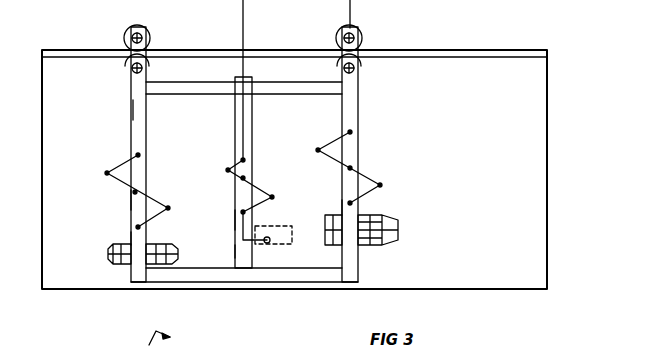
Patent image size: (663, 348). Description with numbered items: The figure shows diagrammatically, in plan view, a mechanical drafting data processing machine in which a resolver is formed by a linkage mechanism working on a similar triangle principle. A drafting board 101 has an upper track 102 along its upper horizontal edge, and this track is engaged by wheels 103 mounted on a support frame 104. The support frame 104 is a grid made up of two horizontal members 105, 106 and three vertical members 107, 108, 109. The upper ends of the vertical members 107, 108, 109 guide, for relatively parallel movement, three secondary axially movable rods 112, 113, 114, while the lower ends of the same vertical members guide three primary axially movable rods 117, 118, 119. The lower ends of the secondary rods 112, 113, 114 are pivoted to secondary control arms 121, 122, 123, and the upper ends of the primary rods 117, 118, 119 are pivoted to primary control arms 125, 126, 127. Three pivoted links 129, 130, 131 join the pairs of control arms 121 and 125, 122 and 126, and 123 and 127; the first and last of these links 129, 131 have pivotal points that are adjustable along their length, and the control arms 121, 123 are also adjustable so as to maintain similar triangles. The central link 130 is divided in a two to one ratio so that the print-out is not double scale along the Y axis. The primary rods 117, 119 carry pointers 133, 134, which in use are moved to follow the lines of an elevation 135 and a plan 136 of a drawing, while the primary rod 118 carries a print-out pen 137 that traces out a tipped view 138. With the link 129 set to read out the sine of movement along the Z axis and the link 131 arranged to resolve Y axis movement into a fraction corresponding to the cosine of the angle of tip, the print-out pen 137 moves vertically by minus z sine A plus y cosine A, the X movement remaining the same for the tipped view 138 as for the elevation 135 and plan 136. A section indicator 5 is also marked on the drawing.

The drafting board 101 is at (548, 196).
The upper track 102 is at (493, 53).
The wheels 103 is at (124, 65).
The support frame 104 is at (132, 202).
The horizontal member 105 is at (306, 101).
The horizontal member 106 is at (310, 283).
The vertical member 107 is at (147, 118).
The vertical member 108 is at (253, 110).
The vertical member 109 is at (359, 143).
The secondary axially movable rod 112 is at (131, 108).
The secondary axially movable rod 113 is at (244, 16).
The secondary axially movable rod 114 is at (352, 16).
The primary axially movable rod 117 is at (133, 237).
The primary axially movable rod 118 is at (235, 220).
The primary axially movable rod 119 is at (342, 212).
The secondary control arm 121 is at (107, 172).
The secondary control arm 122 is at (228, 169).
The secondary control arm 123 is at (318, 149).
The primary control arm 125 is at (148, 216).
The primary control arm 126 is at (262, 200).
The primary control arm 127 is at (370, 192).
The pivoted link 129 is at (150, 196).
The pivoted link 130 is at (255, 185).
The pivoted link 131 is at (368, 180).
The pointer 133 is at (166, 256).
The pointer 134 is at (378, 232).
The elevation 135 is at (107, 256).
The plan 136 is at (404, 226).
The print-out pen 137 is at (268, 244).
The tipped view 138 is at (230, 250).
The section line 5 is at (165, 339).